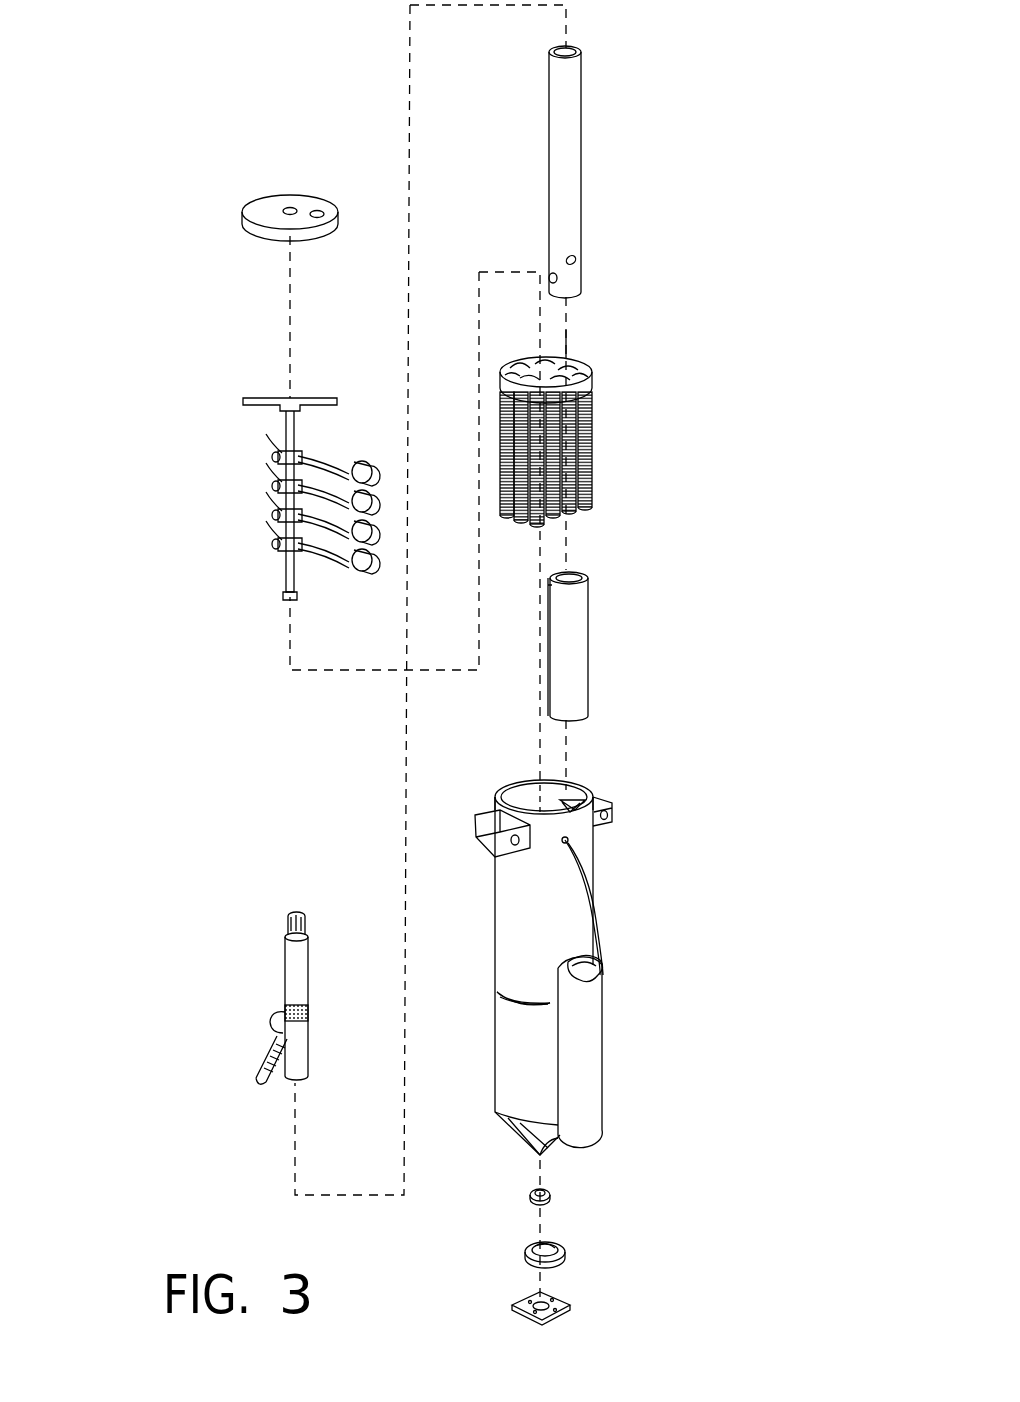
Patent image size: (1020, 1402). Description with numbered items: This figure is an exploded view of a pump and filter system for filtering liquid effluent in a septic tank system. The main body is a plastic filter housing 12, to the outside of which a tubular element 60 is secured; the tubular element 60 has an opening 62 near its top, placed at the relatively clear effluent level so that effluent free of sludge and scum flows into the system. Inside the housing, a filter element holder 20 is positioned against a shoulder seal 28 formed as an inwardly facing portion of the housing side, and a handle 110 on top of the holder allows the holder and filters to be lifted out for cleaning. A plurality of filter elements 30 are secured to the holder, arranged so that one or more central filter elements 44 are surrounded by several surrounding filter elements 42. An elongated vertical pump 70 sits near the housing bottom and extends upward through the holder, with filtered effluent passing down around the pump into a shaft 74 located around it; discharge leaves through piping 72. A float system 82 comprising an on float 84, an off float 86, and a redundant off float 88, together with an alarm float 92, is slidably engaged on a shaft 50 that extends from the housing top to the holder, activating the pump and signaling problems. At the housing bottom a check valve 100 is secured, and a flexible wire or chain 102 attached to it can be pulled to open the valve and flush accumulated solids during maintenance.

The filter housing 12 is at (565, 917).
The filter element holder 20 is at (592, 383).
The shoulder seal 28 is at (515, 1000).
The filter elements 30 is at (718, 393).
The surrounding filter elements 42 is at (595, 435).
The central filter elements 44 is at (572, 515).
The shaft 50 is at (288, 568).
The tubular element 60 is at (590, 1080).
The opening 62 is at (605, 972).
The pump 70 is at (292, 970).
The piping 72 is at (572, 205).
The shaft 74 is at (574, 574).
The float system 82 is at (178, 478).
The on float 84 is at (382, 505).
The off float 86 is at (382, 535).
The redundant off float 88 is at (382, 565).
The alarm float 92 is at (380, 455).
The check valve 100 is at (575, 1190).
The flexible wire or chain 102 is at (585, 870).
The handle 110 is at (572, 330).